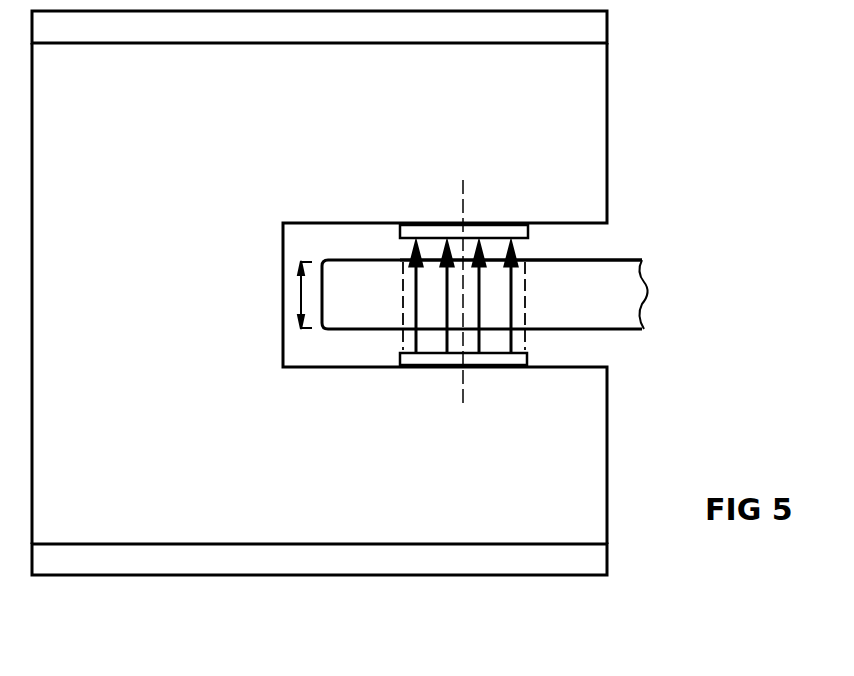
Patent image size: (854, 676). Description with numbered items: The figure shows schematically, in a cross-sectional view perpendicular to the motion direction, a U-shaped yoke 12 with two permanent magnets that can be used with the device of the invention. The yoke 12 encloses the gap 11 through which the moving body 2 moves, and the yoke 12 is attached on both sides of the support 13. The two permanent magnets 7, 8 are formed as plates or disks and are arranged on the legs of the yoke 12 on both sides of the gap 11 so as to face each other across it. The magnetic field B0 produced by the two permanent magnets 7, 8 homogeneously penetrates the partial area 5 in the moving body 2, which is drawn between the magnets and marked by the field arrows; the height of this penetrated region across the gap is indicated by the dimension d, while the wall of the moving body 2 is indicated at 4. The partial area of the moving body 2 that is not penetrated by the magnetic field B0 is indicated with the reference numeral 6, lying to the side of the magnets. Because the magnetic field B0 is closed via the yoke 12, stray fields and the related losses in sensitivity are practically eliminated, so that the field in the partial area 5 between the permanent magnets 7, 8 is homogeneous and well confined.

The moving body 2 is at (615, 275).
The tube wall 4 is at (600, 259).
The partial area 5 is at (405, 305).
The partial area not penetrated by the magnetic field 6 is at (572, 297).
The permanent magnet 7 is at (492, 224).
The permanent magnet 8 is at (490, 366).
The gap 11 is at (575, 347).
The yoke 12 is at (598, 135).
The support 13 is at (598, 27).
The magnetic field B0 is at (410, 338).
The gap distance d is at (300, 295).